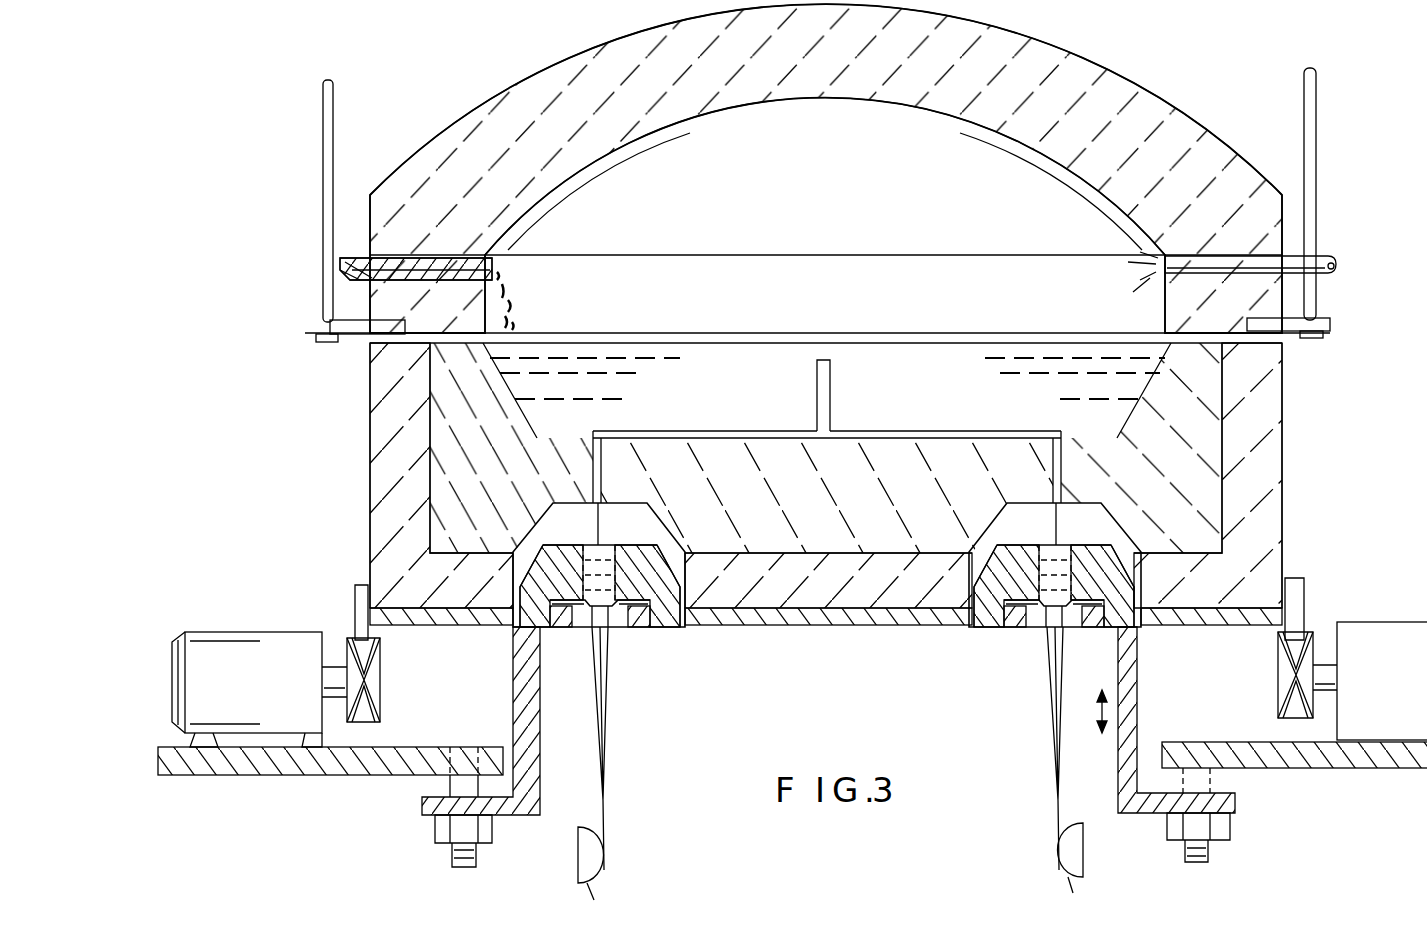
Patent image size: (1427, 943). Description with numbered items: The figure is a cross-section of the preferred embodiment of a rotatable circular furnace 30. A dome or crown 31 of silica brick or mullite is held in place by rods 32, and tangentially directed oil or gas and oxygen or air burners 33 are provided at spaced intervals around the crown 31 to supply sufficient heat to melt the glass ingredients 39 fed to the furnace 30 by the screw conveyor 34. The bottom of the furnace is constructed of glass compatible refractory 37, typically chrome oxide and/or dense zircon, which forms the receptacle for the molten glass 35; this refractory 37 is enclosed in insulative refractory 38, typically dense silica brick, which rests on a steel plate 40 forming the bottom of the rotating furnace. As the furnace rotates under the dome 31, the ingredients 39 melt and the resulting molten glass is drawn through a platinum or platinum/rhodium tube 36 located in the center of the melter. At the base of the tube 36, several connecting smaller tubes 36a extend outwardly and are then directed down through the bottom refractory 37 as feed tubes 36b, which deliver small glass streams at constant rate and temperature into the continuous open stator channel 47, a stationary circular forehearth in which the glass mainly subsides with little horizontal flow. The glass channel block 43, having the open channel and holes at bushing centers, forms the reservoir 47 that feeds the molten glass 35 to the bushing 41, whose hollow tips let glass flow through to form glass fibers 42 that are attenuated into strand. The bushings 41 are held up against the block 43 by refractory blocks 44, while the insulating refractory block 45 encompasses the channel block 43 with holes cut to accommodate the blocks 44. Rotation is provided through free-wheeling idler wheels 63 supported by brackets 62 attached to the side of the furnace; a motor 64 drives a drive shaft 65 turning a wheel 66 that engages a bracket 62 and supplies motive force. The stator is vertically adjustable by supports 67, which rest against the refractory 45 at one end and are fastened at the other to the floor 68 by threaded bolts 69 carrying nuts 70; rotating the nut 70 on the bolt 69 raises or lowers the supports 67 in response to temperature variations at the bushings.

The circular furnace 30 is at (352, 442).
The dome 31 is at (1122, 75).
The rods 32 is at (322, 170).
The burners 33 is at (1178, 286).
The screw conveyor 34 is at (505, 256).
The molten glass 35 is at (628, 370).
The tube 36 is at (831, 392).
The connecting smaller tubes 36a is at (700, 432).
The feed tubes 36b is at (592, 478).
The glass compatible refractory 37 is at (1210, 393).
The insulative refractory 38 is at (1283, 466).
The glass ingredients 39 is at (518, 293).
The steel plate 40 is at (835, 626).
The bushing 41 is at (580, 620).
The glass fibers 42 is at (608, 690).
The glass channel block 43 is at (620, 548).
The refractory blocks 44 is at (650, 620).
The insulating refractory block 45 is at (528, 545).
The stator channel 47 is at (592, 545).
The brackets 62 is at (358, 585).
The idler rollers or wheels 63 is at (1278, 662).
The motor 64 is at (230, 632).
The drive shaft 65 is at (335, 667).
The wheel 66 is at (383, 682).
The supports 67 is at (520, 698).
The floor 68 is at (300, 777).
The bolts 69 is at (455, 868).
The nuts 70 is at (433, 832).